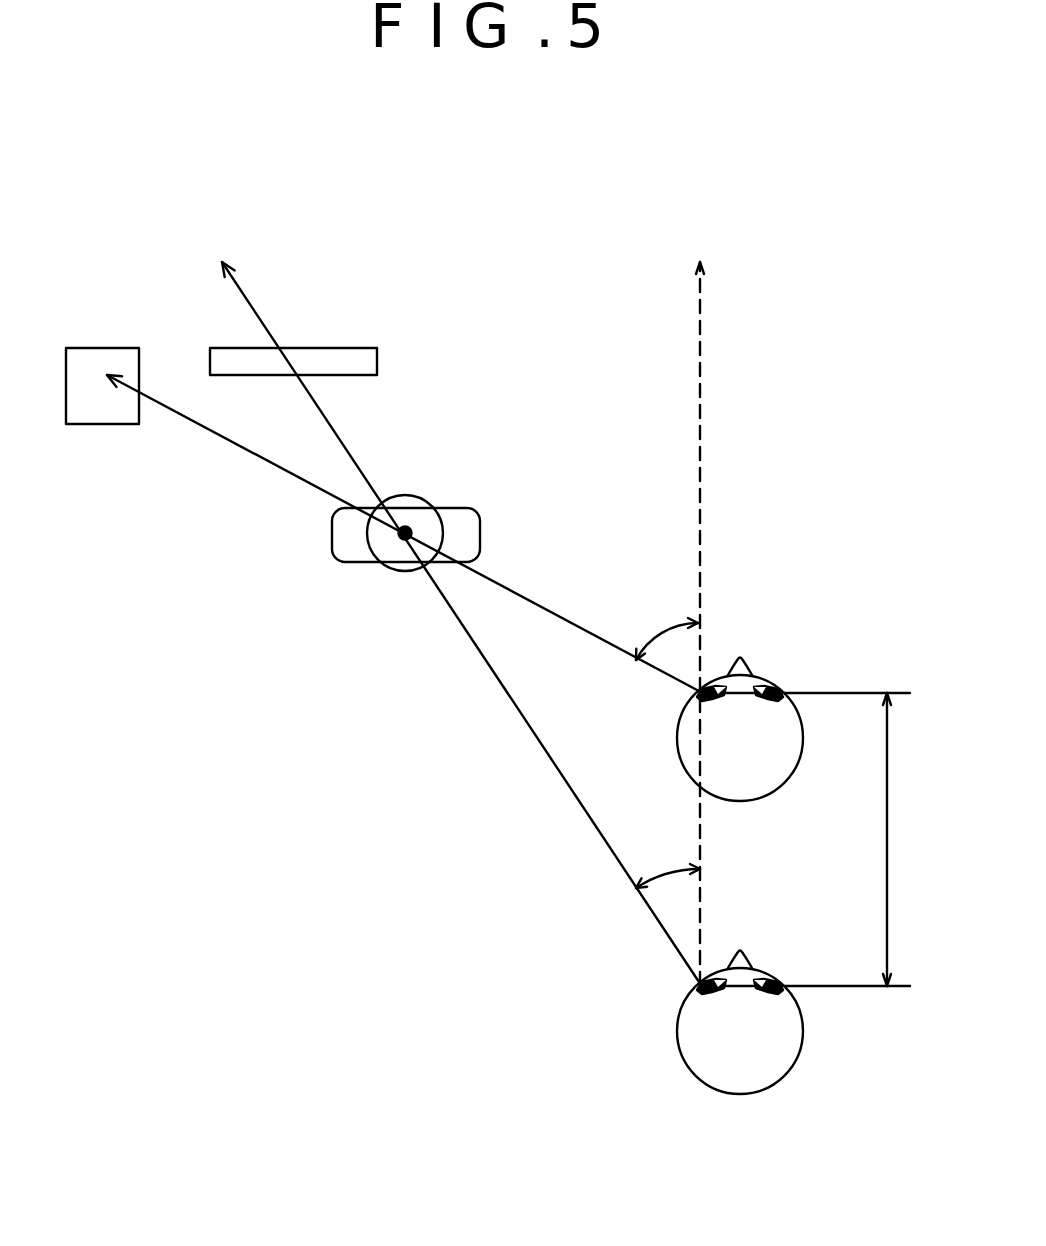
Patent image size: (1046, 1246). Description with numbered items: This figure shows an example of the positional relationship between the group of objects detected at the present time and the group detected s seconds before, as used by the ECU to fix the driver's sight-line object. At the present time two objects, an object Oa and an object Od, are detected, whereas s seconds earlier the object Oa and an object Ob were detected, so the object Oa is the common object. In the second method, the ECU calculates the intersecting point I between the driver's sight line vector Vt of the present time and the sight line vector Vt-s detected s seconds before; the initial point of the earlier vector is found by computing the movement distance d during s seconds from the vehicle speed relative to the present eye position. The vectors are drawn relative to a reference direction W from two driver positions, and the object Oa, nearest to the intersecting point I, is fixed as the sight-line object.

The object Od is at (100, 347).
The object Ob is at (340, 347).
The object Oa is at (482, 527).
The intersecting point I is at (405, 540).
The sight line vector of s sec before the present time Vt-s is at (252, 300).
The sight line vector of the present time Vt is at (257, 457).
The reference direction (forward axis) W is at (700, 327).
The movement distance of observer d is at (806, 839).